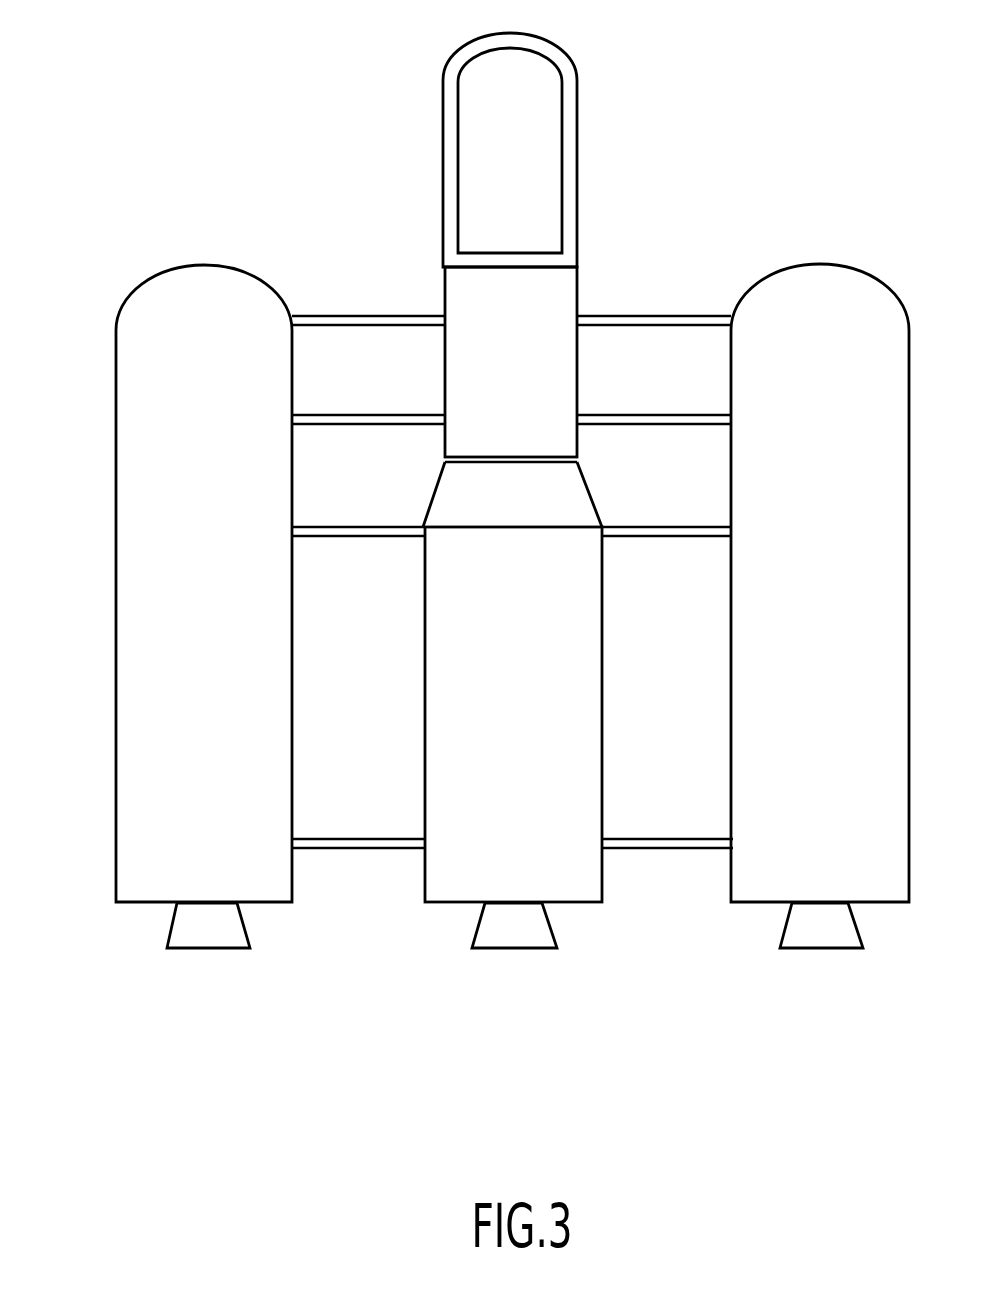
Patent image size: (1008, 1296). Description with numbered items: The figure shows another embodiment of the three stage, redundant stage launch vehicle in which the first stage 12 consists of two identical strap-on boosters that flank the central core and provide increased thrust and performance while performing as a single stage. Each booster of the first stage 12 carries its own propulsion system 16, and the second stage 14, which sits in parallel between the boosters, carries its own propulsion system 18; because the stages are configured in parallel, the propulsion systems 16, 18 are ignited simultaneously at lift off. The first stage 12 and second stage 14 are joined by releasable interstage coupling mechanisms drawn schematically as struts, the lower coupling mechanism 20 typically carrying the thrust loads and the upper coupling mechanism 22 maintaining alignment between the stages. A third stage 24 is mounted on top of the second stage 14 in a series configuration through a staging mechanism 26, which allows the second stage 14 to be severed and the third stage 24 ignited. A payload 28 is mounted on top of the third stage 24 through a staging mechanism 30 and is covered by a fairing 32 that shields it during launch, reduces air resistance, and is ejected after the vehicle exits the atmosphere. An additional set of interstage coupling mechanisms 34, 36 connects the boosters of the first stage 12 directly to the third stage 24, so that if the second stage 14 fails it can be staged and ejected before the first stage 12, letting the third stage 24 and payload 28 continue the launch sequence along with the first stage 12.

The first stage 12 is at (116, 402).
The second stage 14 is at (603, 655).
The propulsion system 16 is at (171, 931).
The propulsion system 18 is at (481, 930).
The lower interstage coupling mechanism 20 is at (367, 850).
The upper interstage coupling mechanism 22 is at (365, 526).
The third stage 24 is at (578, 443).
The staging mechanism 26 is at (585, 467).
The payload 28 is at (562, 190).
The staging mechanism 30 is at (588, 251).
The fairing 32 is at (569, 63).
The interstage coupling mechanism 34 is at (362, 316).
The interstage coupling mechanism 36 is at (363, 414).